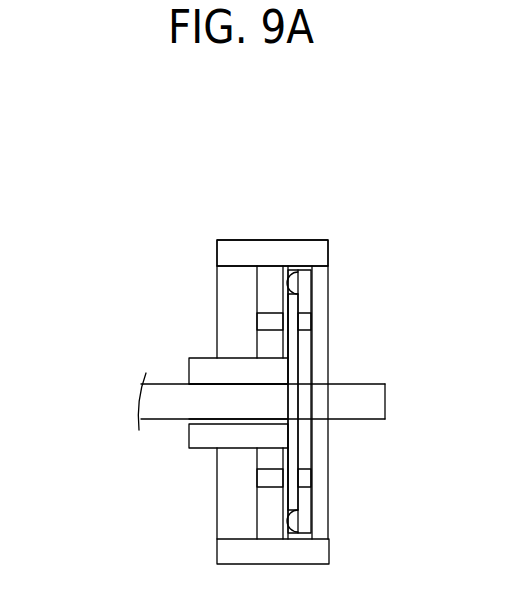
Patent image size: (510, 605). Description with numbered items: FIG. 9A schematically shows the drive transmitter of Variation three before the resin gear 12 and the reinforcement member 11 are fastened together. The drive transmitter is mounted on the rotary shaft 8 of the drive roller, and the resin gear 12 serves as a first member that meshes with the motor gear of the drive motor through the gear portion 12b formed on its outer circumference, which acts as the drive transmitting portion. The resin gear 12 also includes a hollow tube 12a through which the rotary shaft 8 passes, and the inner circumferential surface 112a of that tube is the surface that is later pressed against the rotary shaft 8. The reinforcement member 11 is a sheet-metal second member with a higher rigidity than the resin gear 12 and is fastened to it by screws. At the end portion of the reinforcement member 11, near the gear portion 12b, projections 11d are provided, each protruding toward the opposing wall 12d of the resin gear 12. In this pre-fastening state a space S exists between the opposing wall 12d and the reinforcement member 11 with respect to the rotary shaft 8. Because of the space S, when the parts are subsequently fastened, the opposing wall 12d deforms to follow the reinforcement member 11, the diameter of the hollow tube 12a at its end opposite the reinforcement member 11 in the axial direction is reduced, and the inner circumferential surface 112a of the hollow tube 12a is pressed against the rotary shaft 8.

The rotary shaft 8 is at (380, 384).
The reinforcement member 11 is at (316, 294).
The projection 11d is at (293, 271).
The resin gear 12 is at (248, 489).
The hollow tube 12a is at (205, 358).
The gear portion 12b is at (245, 240).
The opposing wall 12d is at (257, 292).
The inner peripheral surface 112a is at (208, 385).
The space S is at (292, 346).